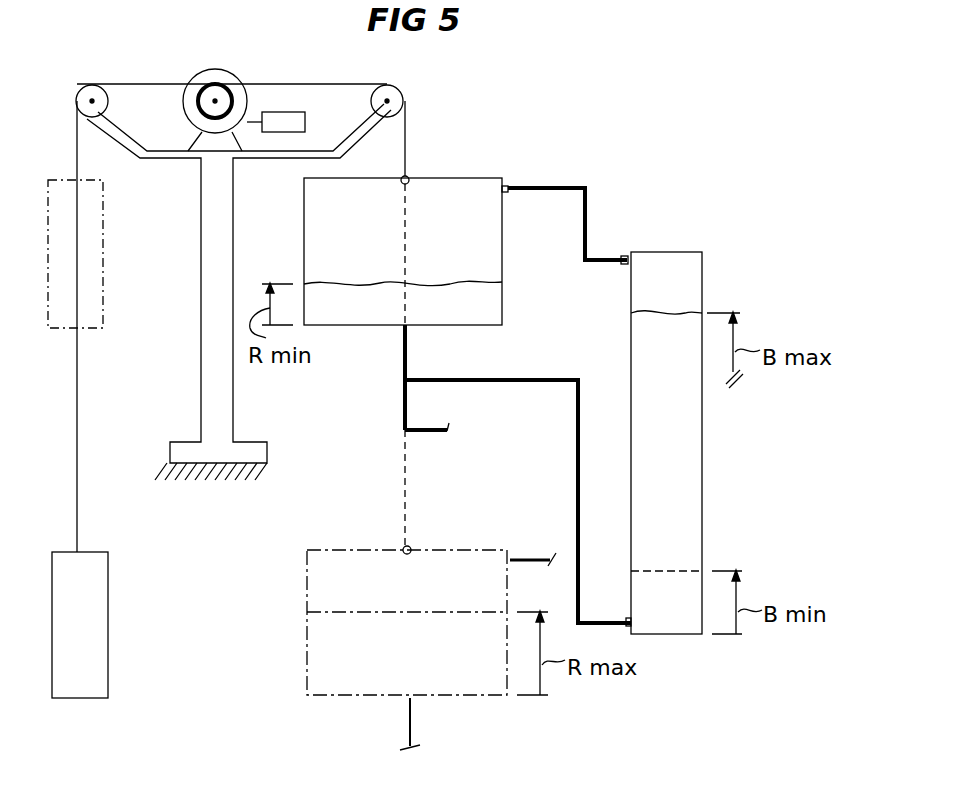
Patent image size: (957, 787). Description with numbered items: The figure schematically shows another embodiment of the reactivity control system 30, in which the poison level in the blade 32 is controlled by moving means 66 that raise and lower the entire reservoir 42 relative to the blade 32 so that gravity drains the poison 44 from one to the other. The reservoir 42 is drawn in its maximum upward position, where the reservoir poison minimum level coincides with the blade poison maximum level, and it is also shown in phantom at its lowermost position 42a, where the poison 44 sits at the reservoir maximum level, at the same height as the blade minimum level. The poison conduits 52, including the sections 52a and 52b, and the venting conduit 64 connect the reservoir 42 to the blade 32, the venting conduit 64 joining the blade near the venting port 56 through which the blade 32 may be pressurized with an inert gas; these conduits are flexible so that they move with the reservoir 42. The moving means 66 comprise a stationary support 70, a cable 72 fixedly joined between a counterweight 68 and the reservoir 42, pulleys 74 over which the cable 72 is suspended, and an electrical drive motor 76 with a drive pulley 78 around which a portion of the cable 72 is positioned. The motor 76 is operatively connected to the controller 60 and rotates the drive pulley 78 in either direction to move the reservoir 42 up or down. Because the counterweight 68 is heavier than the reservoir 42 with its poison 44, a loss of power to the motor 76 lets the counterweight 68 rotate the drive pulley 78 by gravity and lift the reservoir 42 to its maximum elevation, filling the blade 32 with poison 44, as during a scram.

The reactivity control system 30 is at (716, 226).
The blade 32 is at (702, 440).
The reservoir 42 is at (303, 190).
The reservoir lowermost position 42a is at (305, 690).
The poison 44 is at (490, 298).
The poison conduit 52 is at (407, 356).
The poison conduit section 52a is at (510, 378).
The poison conduit section 52b is at (445, 439).
The venting port 56 is at (624, 256).
The controller 60 is at (305, 122).
The venting conduit 64 is at (552, 186).
The reservoir moving means 66 is at (175, 336).
The counterweight 68 is at (108, 607).
The stationary support 70 is at (201, 272).
The cable 72 is at (78, 390).
The pulleys 74 is at (108, 101).
The electrical drive motor 76 is at (227, 78).
The drive pulley 78 is at (200, 78).